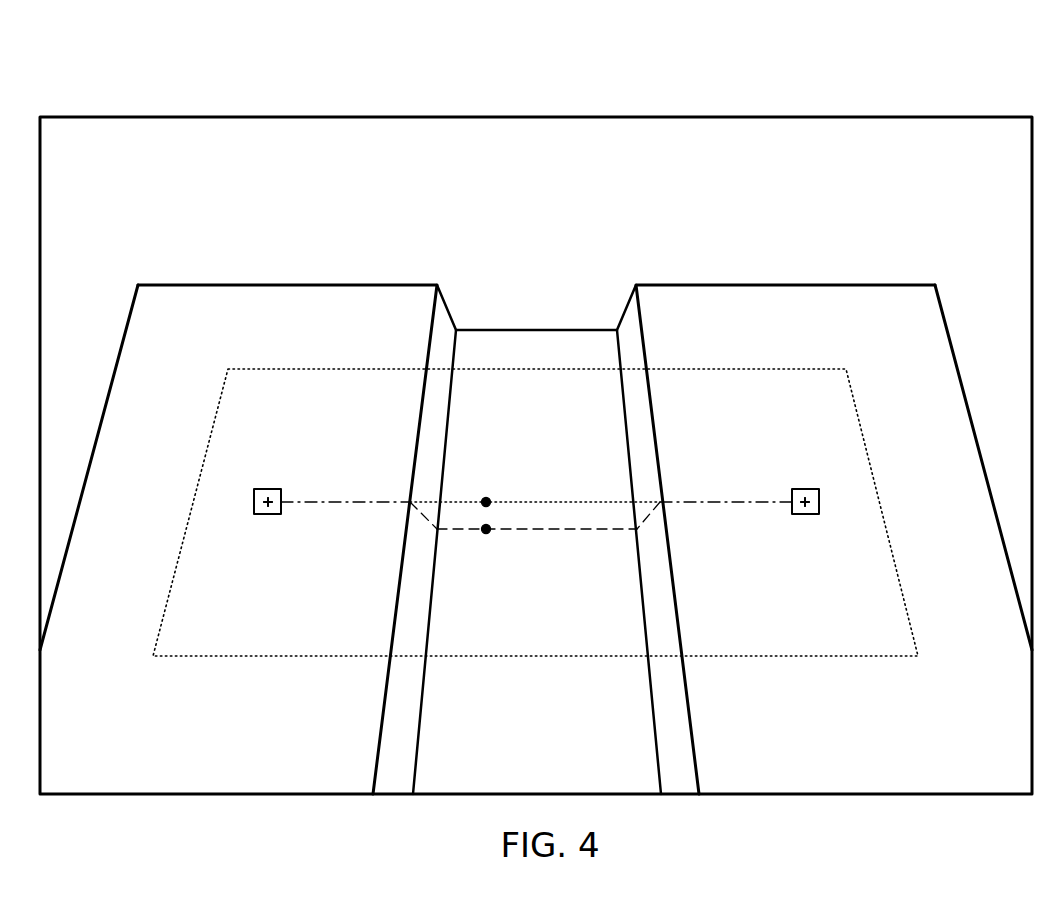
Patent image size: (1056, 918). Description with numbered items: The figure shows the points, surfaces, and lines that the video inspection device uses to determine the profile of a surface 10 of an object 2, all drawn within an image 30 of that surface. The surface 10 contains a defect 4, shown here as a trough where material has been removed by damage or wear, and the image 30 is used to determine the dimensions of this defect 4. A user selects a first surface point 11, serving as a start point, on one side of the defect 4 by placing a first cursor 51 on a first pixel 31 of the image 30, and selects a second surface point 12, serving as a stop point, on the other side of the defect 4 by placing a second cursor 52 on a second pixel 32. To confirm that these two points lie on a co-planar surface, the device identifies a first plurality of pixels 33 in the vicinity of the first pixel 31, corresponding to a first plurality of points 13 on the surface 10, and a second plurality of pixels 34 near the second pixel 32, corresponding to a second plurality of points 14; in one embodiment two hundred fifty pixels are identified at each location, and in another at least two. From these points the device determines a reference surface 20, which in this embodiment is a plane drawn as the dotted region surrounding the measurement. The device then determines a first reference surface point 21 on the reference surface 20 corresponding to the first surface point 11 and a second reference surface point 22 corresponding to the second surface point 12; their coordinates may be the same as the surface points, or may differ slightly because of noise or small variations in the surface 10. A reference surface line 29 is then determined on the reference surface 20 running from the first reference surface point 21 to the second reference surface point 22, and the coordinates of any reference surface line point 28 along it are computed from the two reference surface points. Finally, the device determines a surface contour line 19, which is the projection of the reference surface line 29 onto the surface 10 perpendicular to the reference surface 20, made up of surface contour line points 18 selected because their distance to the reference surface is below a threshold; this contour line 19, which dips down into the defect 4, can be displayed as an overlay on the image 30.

The image 30 is at (413, 117).
The object 2 is at (125, 327).
The surface 10 is at (287, 305).
The defect 4 is at (537, 348).
The reference surface 20 is at (772, 370).
The first surface point 11 is at (265, 490).
The first reference surface point 21 is at (268, 502).
The first pixel 31 is at (268, 502).
The first plurality of points 13 is at (268, 515).
The first plurality of pixels 33 is at (268, 502).
The second surface point 12 is at (810, 490).
The second reference surface point 22 is at (805, 502).
The second pixel 32 is at (805, 502).
The second plurality of points 14 is at (808, 515).
The second plurality of pixels 34 is at (805, 502).
The first cursor 51 is at (253, 502).
The second cursor 52 is at (819, 505).
The reference surface line point 28 is at (486, 497).
The reference surface line 29 is at (547, 498).
The surface contour line point 18 is at (487, 535).
The surface contour line 19 is at (567, 533).